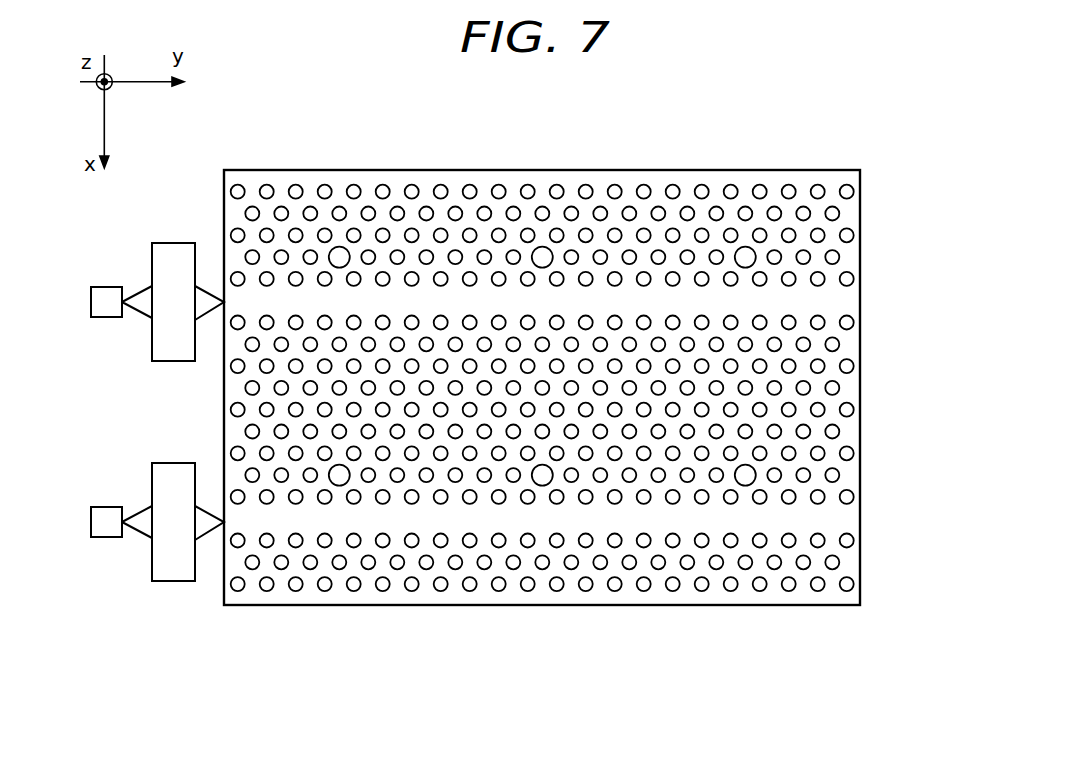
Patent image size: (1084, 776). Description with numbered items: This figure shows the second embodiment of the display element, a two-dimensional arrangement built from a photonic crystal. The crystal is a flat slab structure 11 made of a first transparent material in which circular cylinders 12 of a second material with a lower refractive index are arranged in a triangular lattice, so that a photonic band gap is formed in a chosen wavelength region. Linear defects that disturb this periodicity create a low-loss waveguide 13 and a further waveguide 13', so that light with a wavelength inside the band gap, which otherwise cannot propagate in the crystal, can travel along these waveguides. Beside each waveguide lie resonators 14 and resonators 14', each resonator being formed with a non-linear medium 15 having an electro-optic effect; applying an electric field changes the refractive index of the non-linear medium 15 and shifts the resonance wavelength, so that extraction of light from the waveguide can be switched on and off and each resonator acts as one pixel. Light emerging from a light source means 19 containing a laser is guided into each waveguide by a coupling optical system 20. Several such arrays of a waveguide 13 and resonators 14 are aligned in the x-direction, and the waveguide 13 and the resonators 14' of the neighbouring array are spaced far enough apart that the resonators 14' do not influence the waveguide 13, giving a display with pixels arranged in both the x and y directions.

The slab structure 11 is at (452, 192).
The circular cylinders 12 is at (599, 212).
The waveguide 13 is at (581, 301).
The waveguide 13' is at (583, 519).
The resonator 14 is at (546, 175).
The resonator 14' is at (568, 564).
The non-linear medium 15 is at (336, 262).
The light source means 19 is at (106, 292).
The coupling optical system 20 is at (175, 252).